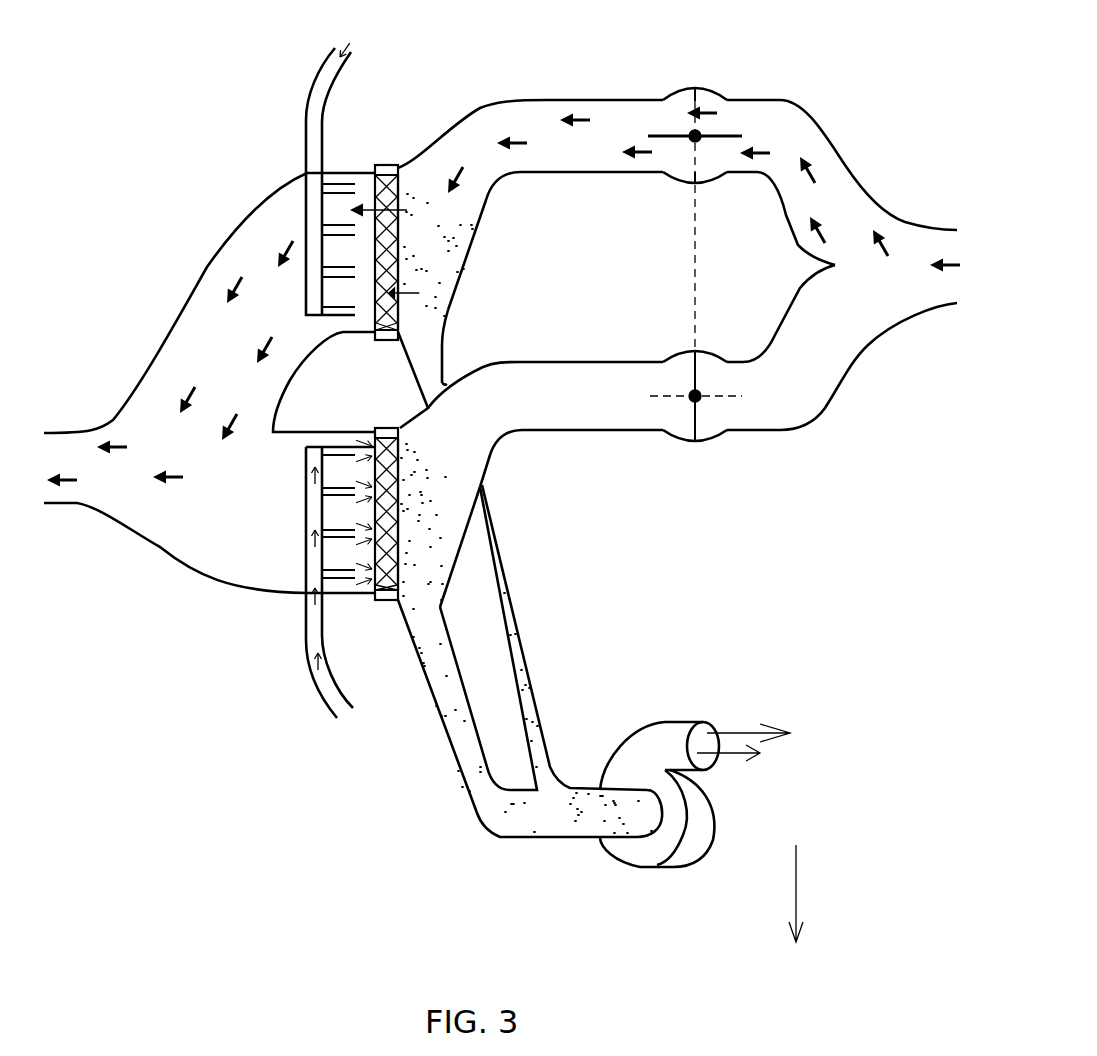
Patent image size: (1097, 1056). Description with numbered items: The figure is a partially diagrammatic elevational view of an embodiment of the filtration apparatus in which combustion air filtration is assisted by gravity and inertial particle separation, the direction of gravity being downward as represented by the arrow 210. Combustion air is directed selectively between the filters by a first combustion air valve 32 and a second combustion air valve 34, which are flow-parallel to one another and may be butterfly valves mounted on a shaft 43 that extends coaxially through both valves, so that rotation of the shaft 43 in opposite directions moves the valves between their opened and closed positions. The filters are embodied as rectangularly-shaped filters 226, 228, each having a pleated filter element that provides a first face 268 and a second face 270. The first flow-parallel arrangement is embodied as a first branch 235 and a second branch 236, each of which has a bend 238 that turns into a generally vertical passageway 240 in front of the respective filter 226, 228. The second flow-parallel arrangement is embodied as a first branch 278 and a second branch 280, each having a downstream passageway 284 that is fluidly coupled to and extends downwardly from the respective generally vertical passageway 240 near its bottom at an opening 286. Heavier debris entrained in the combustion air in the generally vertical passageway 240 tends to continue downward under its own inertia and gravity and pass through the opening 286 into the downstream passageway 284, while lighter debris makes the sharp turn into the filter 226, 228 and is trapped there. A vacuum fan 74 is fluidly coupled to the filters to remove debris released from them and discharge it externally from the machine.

The first combustion air valve 32 is at (677, 88).
The second combustion air valve 34 is at (670, 440).
The shaft 43 is at (697, 243).
The vacuum fan 74 is at (647, 727).
The arrow 210 is at (797, 893).
The first filter 226 is at (380, 165).
The second filter 228 is at (383, 601).
The first branch 235 is at (796, 100).
The second branch 236 is at (797, 428).
The bend 238 is at (480, 100).
The generally vertical passageway 240 is at (487, 217).
The first face 268 is at (403, 282).
The second face 270 is at (370, 258).
The first branch 278 is at (317, 687).
The second branch 280 is at (322, 62).
The downstream passageway 284 is at (530, 658).
The opening 286 is at (438, 348).